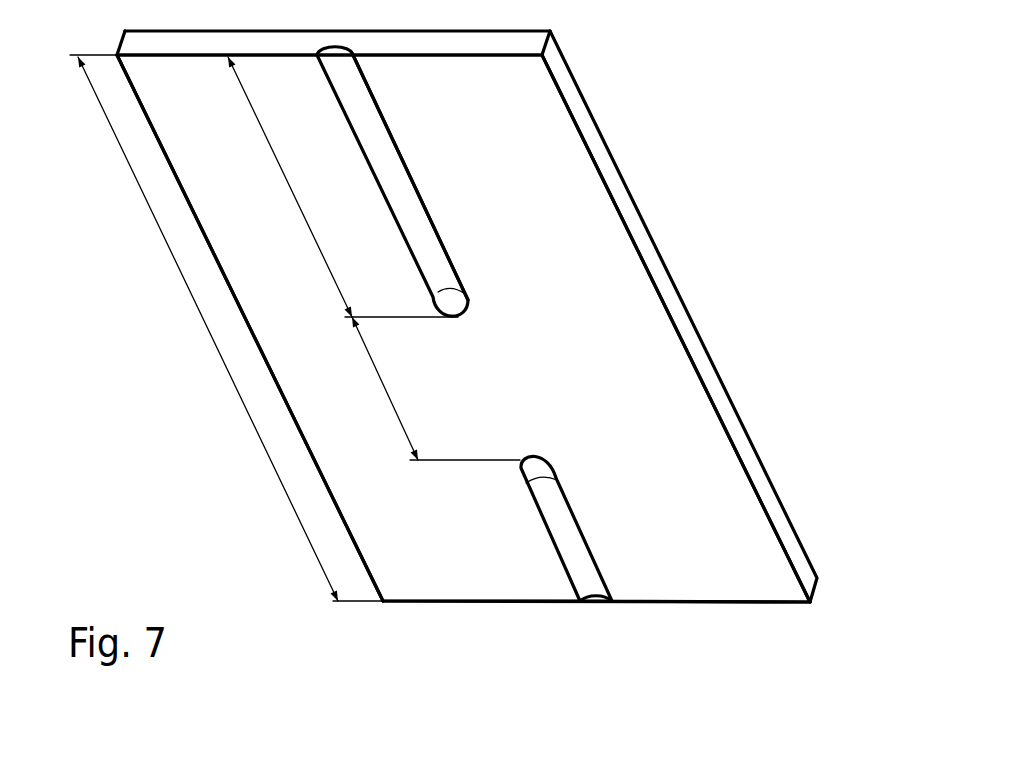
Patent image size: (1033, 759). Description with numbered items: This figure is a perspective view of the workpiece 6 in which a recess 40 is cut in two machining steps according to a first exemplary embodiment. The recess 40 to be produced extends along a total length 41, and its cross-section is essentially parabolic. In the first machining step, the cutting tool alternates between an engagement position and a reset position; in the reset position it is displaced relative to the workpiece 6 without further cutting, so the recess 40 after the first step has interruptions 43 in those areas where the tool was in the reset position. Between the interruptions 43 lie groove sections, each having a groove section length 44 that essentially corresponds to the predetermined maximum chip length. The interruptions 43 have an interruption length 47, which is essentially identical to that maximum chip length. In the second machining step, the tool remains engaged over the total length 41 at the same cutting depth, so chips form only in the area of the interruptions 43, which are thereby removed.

The workpiece 6 is at (752, 404).
The recess 40 is at (430, 226).
The total length 41 is at (226, 328).
The interruptions 43 is at (485, 364).
The groove section length 44 is at (343, 187).
The interruption length 47 is at (430, 388).